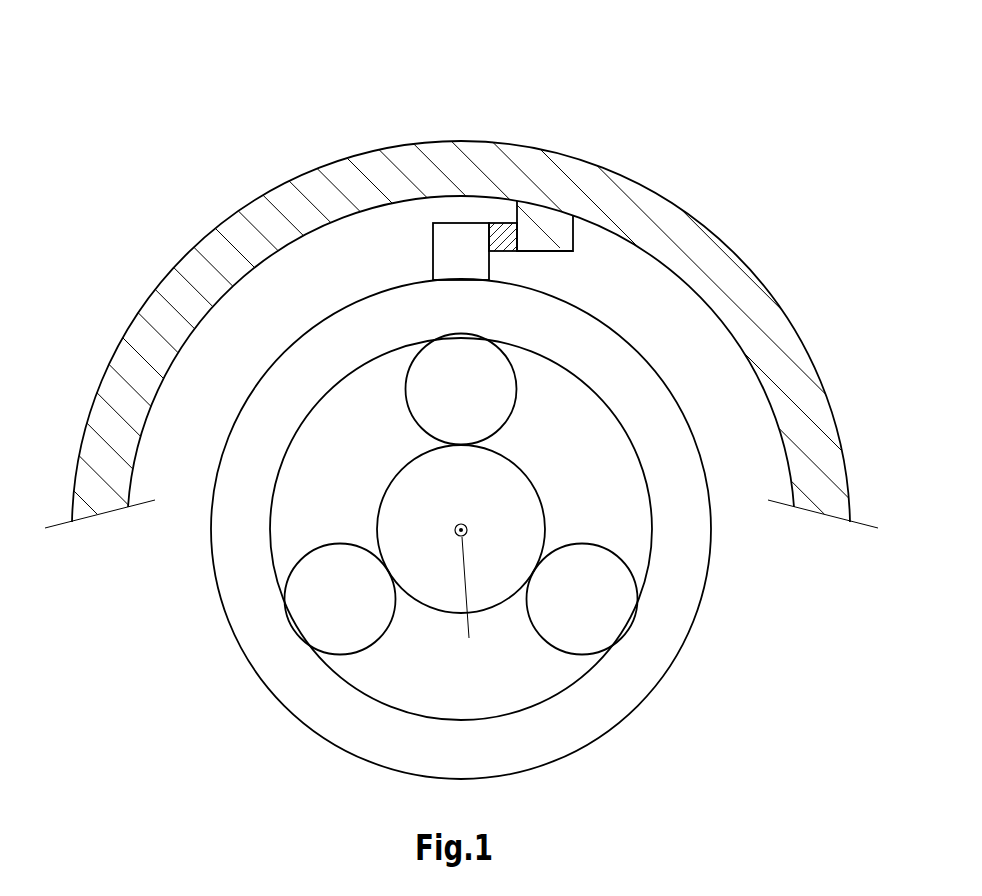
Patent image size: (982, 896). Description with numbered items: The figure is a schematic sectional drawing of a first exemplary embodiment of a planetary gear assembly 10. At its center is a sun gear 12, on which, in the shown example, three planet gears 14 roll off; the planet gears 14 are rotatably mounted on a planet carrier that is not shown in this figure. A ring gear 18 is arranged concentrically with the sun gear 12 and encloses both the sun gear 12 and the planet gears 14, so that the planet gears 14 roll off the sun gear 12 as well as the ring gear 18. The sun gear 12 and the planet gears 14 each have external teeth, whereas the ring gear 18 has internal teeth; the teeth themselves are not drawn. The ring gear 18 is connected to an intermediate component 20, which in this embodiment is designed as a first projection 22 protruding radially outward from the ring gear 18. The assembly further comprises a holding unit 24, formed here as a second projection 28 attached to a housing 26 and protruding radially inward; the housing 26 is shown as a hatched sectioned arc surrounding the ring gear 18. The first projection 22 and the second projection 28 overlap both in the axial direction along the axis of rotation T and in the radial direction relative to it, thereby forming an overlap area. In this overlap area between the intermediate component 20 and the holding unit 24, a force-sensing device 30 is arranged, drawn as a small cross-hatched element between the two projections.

The planetary gear assembly 10 is at (152, 90).
The sun gear 12 is at (512, 548).
The planet gears 14 is at (482, 394).
The ring gear 18 is at (487, 757).
The intermediate component 20 is at (403, 251).
The first projection 22 is at (432, 232).
The holding unit 24 is at (602, 257).
The housing 26 is at (727, 252).
The second projection 28 is at (573, 251).
The force-sensing device 30 is at (499, 222).